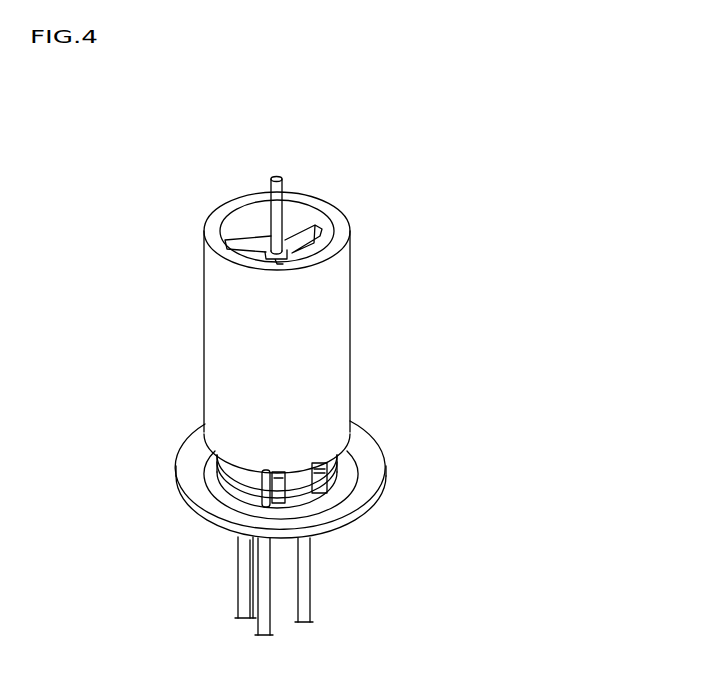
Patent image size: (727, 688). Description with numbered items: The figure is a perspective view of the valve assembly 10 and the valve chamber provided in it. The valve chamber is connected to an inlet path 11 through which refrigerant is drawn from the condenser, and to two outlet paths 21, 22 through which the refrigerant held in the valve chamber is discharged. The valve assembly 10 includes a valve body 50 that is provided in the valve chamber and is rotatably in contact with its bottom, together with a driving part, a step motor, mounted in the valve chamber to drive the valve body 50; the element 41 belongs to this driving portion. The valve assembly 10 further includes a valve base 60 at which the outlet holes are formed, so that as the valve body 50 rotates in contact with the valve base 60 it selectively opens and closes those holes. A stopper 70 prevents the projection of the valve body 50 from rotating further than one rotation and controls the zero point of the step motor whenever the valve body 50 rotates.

The valve assembly 10 is at (413, 180).
The inlet path 11 is at (245, 596).
The outlet path 21 is at (303, 552).
The outlet path 22 is at (265, 582).
The housing 41 is at (327, 321).
The valve body 50 is at (219, 473).
The valve base 60 is at (327, 465).
The stopper 70 is at (250, 500).